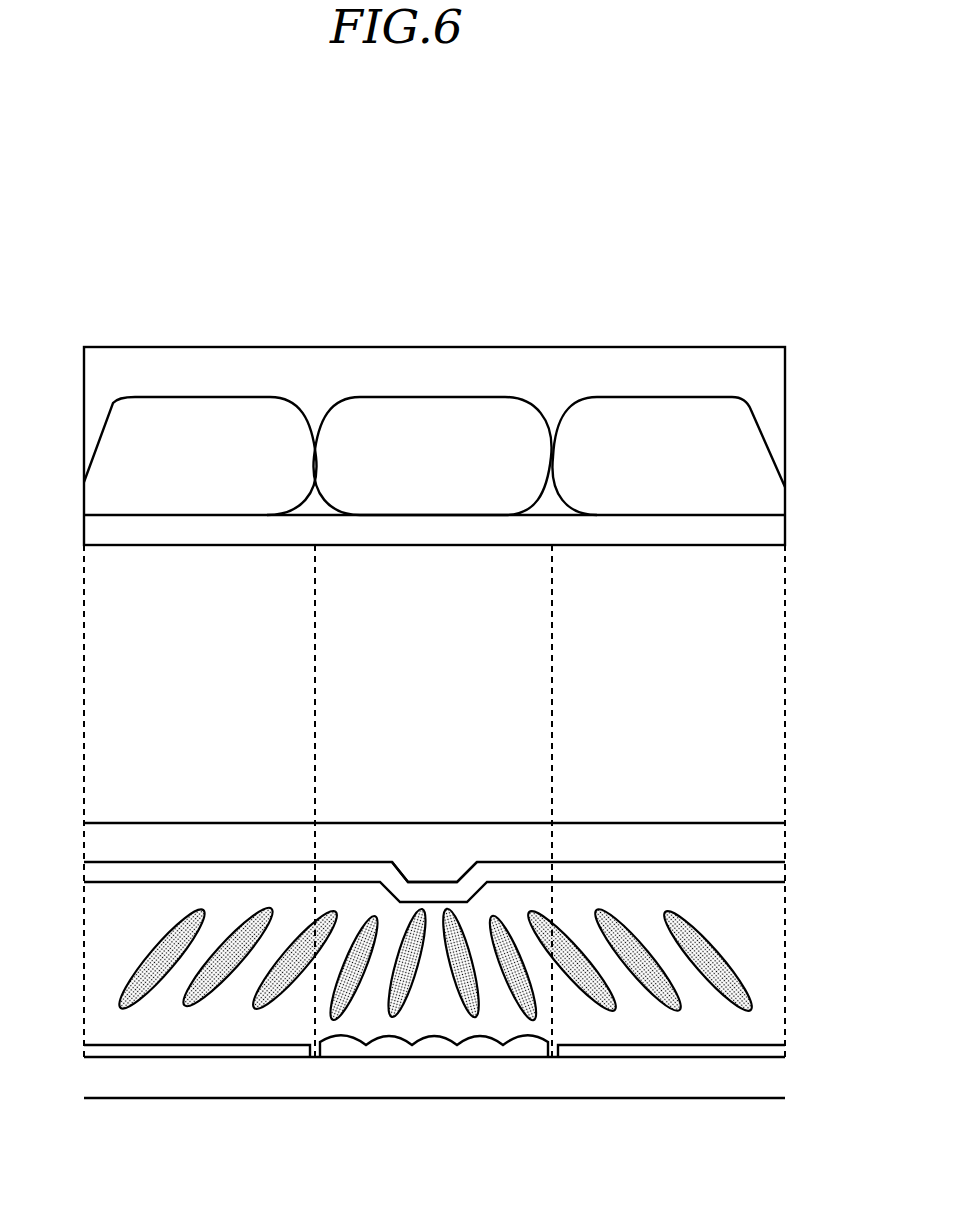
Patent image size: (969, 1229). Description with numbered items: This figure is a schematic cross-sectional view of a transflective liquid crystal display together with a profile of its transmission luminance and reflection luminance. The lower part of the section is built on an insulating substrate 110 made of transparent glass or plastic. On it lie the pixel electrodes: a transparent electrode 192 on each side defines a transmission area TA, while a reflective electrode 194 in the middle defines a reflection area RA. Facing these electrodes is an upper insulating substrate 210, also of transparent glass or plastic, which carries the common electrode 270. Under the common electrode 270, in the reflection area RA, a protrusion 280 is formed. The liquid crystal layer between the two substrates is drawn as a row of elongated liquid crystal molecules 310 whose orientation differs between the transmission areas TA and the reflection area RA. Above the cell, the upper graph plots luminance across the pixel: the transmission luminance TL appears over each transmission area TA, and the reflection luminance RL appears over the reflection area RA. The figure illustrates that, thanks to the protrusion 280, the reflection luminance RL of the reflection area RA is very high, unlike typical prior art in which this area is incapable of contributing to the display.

The insulating substrate 110 is at (488, 1100).
The transparent electrode 192 is at (187, 1050).
The reflective electrode 194 is at (390, 1050).
The insulating substrate 210 is at (203, 840).
The common electrode 270 is at (640, 873).
The protrusion 280 is at (433, 872).
The liquid crystal molecules 310 is at (717, 957).
The transmission luminance TL is at (203, 397).
The reflection luminance RL is at (432, 397).
The transmission area TA is at (315, 653).
The reflection area RA is at (552, 653).